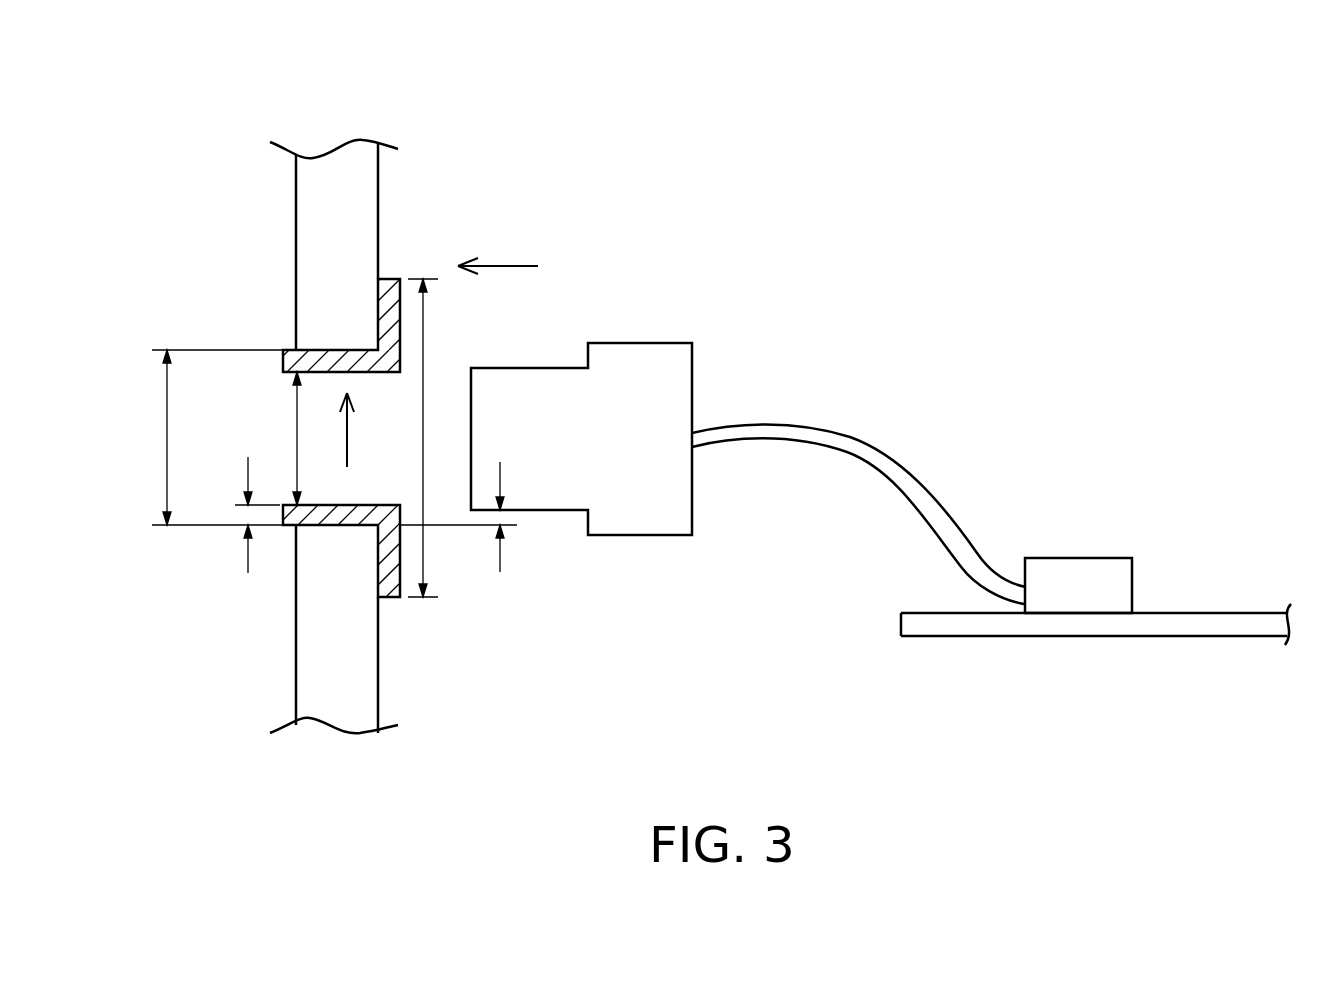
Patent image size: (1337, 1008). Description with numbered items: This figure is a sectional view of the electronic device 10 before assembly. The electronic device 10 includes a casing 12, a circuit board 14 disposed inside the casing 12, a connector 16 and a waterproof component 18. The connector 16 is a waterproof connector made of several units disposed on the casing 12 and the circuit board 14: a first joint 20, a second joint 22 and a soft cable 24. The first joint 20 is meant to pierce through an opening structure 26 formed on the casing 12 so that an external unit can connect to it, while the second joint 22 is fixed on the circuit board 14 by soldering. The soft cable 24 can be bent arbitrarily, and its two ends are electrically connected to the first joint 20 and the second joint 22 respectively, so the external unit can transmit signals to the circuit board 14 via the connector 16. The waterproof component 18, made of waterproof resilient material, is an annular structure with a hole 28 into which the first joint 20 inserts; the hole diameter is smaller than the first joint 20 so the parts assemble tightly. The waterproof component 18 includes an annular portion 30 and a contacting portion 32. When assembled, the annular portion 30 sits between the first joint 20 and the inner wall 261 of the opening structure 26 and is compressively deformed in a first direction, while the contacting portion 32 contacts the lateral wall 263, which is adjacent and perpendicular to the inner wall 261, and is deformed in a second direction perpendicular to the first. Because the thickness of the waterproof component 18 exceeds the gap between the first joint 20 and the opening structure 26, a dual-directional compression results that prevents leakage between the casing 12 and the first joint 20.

The electronic device 10 is at (1206, 132).
The casing 12 is at (322, 227).
The circuit board 14 is at (1219, 625).
The connector 16 is at (801, 401).
The waterproof component 18 is at (400, 613).
The first joint 20 is at (655, 377).
The second joint 22 is at (1078, 438).
The soft cable 24 is at (867, 447).
The opening structure 26 is at (332, 297).
The inner wall 261 is at (338, 350).
The lateral wall 263 is at (378, 310).
The hole 28 is at (442, 493).
The annular portion 30 is at (324, 517).
The contacting portion 32 is at (388, 582).